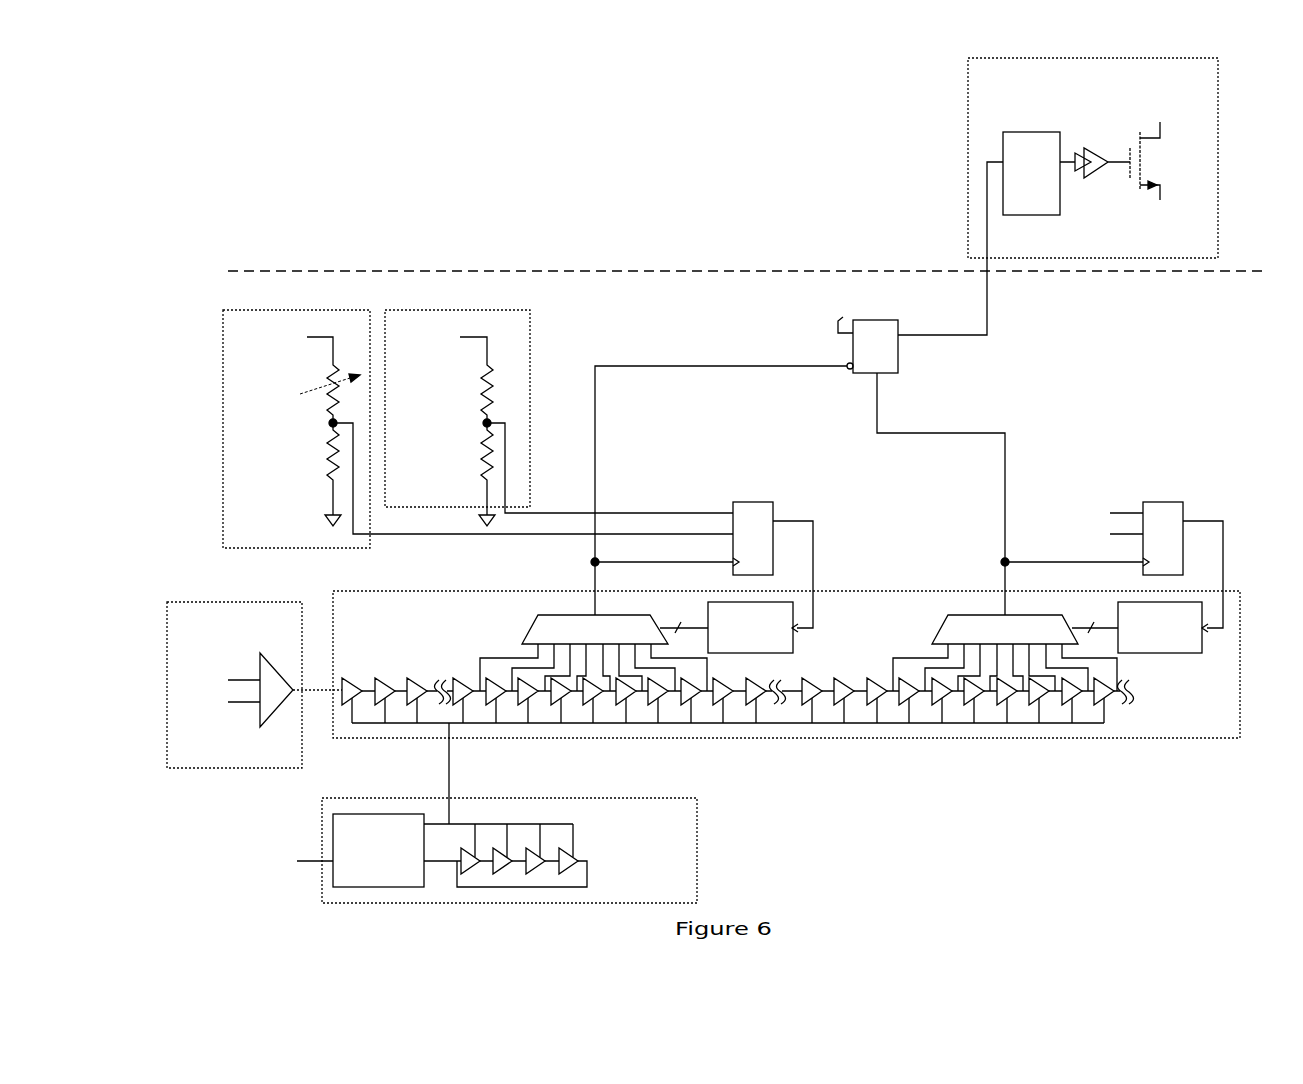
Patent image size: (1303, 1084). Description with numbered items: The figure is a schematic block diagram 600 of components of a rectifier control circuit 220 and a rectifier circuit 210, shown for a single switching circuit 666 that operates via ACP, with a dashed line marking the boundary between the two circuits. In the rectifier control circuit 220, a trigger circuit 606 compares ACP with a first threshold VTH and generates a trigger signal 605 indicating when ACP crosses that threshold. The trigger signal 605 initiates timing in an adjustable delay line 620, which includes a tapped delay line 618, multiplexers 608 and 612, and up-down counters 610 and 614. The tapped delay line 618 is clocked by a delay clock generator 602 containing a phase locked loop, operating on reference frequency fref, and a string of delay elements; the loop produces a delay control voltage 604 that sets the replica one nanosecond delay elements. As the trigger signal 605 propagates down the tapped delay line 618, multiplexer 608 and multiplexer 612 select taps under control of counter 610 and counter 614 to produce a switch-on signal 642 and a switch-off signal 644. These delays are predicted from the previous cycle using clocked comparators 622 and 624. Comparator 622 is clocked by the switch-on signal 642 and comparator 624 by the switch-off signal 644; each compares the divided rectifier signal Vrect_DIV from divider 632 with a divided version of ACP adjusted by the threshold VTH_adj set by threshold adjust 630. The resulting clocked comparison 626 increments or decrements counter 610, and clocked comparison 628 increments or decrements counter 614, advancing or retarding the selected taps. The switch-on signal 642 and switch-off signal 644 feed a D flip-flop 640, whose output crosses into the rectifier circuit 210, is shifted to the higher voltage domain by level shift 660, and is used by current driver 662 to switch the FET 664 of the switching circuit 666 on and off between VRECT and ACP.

The schematic block diagram 600 is at (243, 135).
The rectifier circuit 210 is at (906, 196).
The rectifier control circuit 220 is at (721, 593).
The switching circuit 666 is at (1058, 196).
The FET 664 is at (1130, 118).
The level shift 660 is at (1031, 173).
The current driver 662 is at (1090, 178).
The D flip-flop 640 is at (887, 320).
The switch-on signal 642 is at (728, 365).
The switch-off signal 644 is at (968, 432).
The threshold adjust 630 is at (478, 429).
The divider 632 is at (559, 418).
The clocked comparator 622 is at (760, 502).
The clocked comparator 624 is at (1173, 502).
The clocked comparison 626 is at (817, 560).
The clocked comparison 628 is at (1225, 560).
The trigger signal 605 is at (322, 688).
The trigger circuit 606 is at (234, 685).
The adjustable delay line 620 is at (786, 664).
The tapped delay line 618 is at (820, 664).
The multiplexer 608 is at (593, 653).
The multiplexer 612 is at (1005, 653).
The up-down counter 610 is at (729, 627).
The up-down counter 614 is at (1140, 627).
The delay control voltage 604 is at (449, 753).
The delay clock generator 602 is at (480, 850).